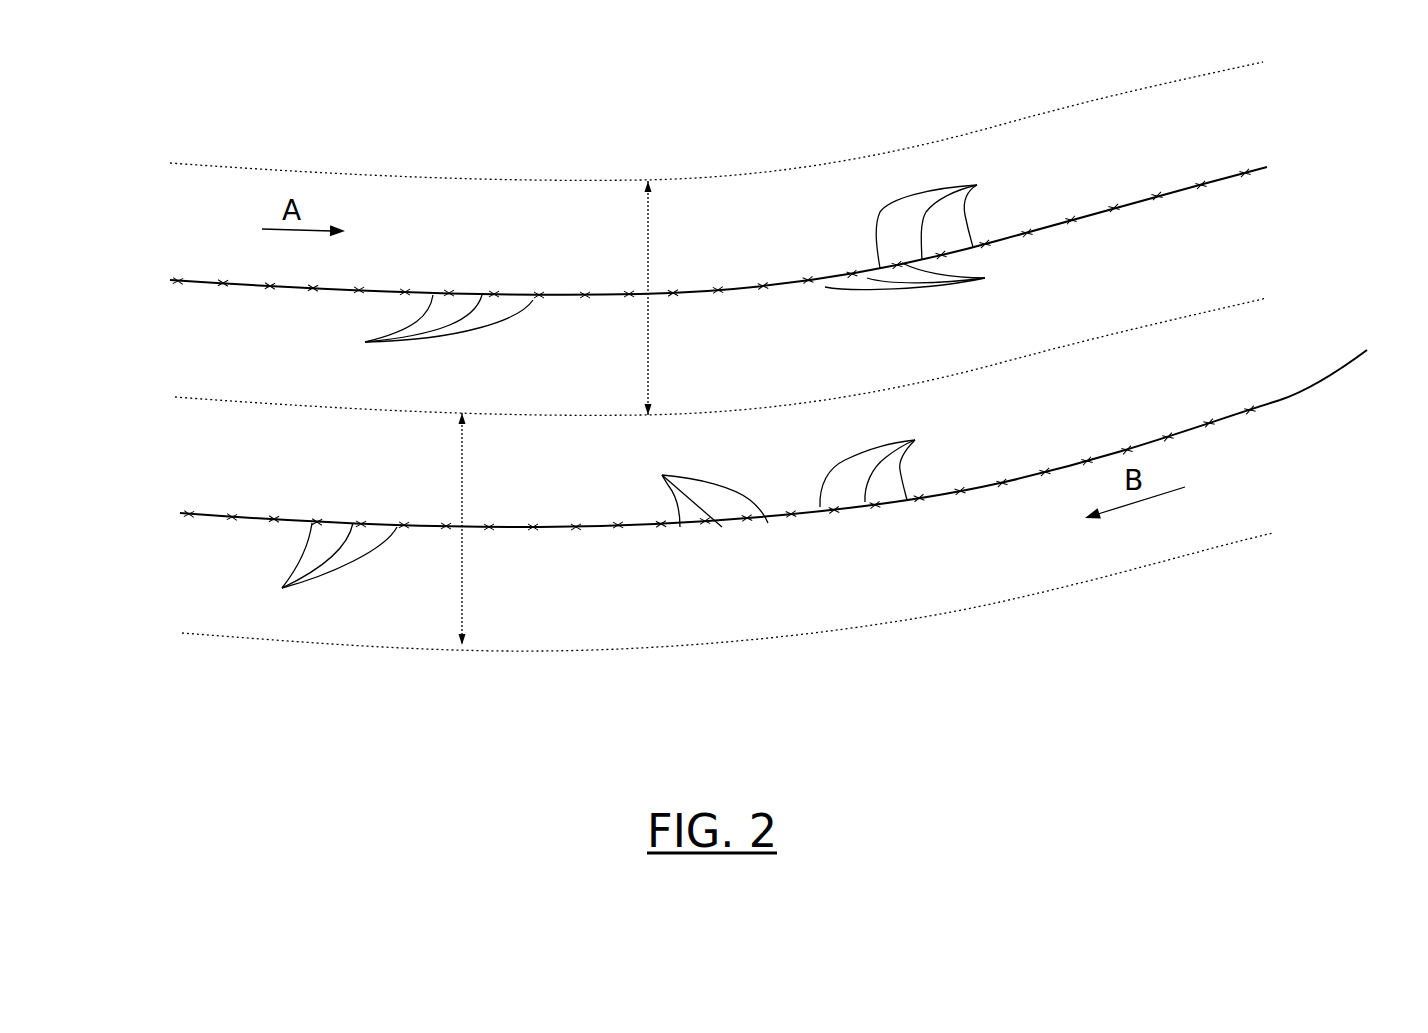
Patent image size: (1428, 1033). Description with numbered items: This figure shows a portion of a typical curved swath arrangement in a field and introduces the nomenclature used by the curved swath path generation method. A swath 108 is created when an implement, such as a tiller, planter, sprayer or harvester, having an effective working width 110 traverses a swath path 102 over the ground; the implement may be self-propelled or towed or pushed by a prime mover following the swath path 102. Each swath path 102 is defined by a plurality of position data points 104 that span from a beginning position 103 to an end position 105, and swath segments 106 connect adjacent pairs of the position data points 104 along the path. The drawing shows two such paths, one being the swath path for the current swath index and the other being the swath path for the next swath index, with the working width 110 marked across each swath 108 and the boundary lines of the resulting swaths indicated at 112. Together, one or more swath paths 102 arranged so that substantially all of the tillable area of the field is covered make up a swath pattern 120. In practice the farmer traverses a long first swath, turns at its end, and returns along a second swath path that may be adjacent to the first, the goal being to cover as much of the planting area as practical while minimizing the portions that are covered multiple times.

The swath path 102 is at (240, 305).
The beginning position 103 is at (172, 280).
The position data points 104 is at (630, 434).
The end position 105 is at (1267, 167).
The swath segments 106 is at (820, 349).
The swath 108 is at (453, 152).
The effective working width 110 is at (647, 247).
The flow passage wall 112 is at (1033, 118).
The swath pattern 120 is at (373, 770).